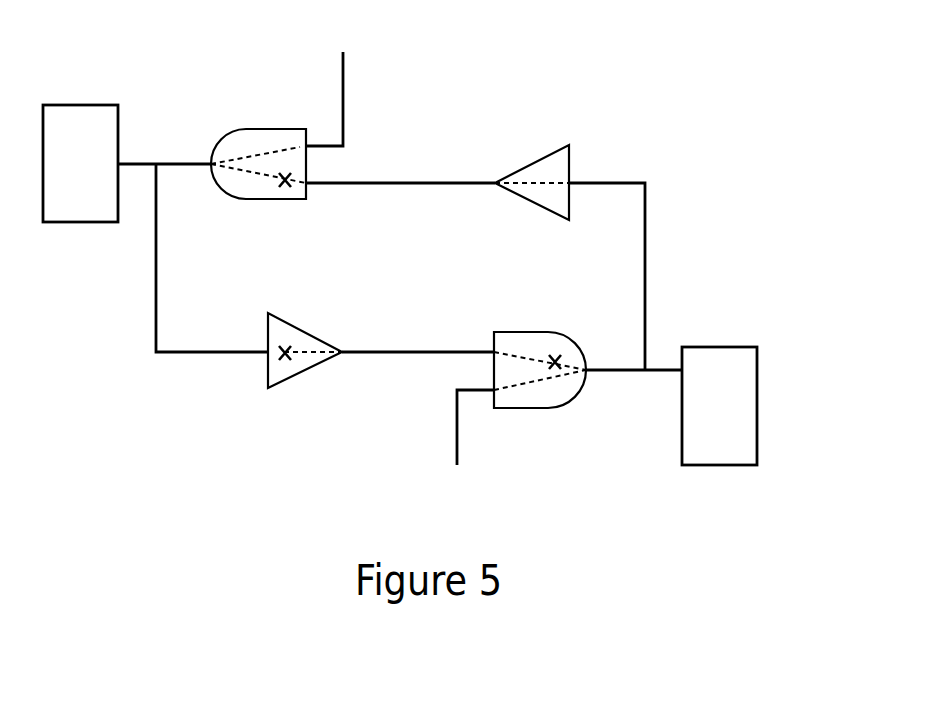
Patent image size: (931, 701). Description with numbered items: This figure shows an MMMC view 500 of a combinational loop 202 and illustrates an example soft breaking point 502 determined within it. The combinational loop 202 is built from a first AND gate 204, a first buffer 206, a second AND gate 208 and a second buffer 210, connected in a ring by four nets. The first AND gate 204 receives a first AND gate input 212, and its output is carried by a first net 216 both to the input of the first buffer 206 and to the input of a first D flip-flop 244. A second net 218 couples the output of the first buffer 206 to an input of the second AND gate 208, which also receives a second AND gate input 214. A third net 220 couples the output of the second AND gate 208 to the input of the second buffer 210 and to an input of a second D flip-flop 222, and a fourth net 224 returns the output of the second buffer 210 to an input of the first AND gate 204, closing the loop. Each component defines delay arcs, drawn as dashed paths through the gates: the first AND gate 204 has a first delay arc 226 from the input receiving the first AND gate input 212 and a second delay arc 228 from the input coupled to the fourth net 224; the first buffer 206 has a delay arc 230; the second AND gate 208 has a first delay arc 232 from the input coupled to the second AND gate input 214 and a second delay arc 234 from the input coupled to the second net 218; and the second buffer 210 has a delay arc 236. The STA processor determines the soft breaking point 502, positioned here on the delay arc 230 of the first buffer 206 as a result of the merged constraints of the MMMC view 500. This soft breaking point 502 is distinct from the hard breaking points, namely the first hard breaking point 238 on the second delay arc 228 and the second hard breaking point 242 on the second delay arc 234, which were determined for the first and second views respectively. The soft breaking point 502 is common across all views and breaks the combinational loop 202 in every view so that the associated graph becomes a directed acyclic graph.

The MMMC view 500 is at (644, 29).
The first D flip-flop 244 is at (80, 105).
The second D flip-flop 222 is at (757, 397).
The combinational loop 202 is at (128, 331).
The first AND gate 204 is at (257, 135).
The first buffer 206 is at (286, 372).
The second AND gate 208 is at (544, 360).
The second buffer 210 is at (532, 165).
The first AND gate input 212 is at (343, 73).
The second AND gate input 214 is at (457, 440).
The first net 216 is at (156, 257).
The second net 218 is at (412, 350).
The third net 220 is at (645, 267).
The fourth net 224 is at (425, 182).
The first delay arc 226 is at (236, 131).
The second delay arc 228 is at (269, 178).
The delay arc 230 is at (295, 345).
The first delay arc 232 is at (528, 388).
The second delay arc 234 is at (553, 333).
The delay arc 236 is at (542, 187).
The first hard breaking point 238 is at (292, 155).
The second hard breaking point 242 is at (570, 340).
The soft breaking point 502 is at (278, 372).